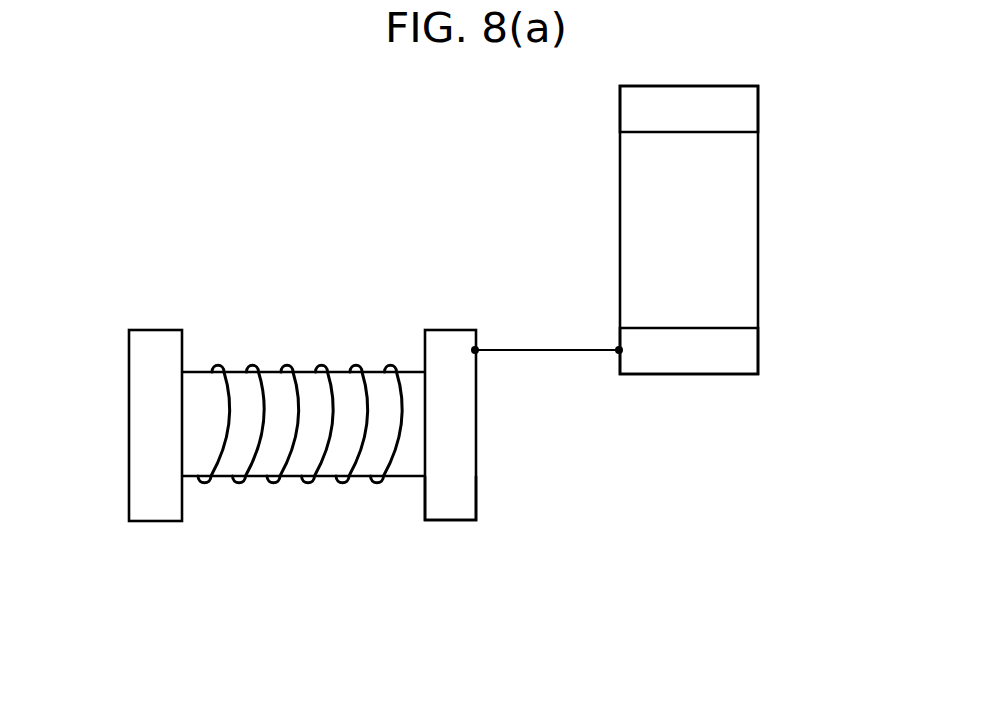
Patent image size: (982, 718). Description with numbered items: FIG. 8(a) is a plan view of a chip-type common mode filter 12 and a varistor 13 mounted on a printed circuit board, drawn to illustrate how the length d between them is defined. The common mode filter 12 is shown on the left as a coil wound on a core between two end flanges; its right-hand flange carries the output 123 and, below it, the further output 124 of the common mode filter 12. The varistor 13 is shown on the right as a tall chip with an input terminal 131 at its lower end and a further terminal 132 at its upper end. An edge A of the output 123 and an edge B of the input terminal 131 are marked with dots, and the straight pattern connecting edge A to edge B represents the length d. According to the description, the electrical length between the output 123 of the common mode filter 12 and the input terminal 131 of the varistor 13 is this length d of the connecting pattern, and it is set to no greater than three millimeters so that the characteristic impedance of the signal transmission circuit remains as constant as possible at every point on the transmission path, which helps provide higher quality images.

The common mode filter 12 is at (295, 300).
The output of the common mode filter 123 is at (448, 329).
The output of the common mode filter 124 is at (448, 520).
The varistor 13 is at (773, 223).
The input terminal of the varistor 131 is at (760, 352).
The upper end portion 132 is at (760, 110).
The edge of the output A is at (475, 350).
The edge of the input terminal B is at (619, 350).
The length d is at (475, 350).